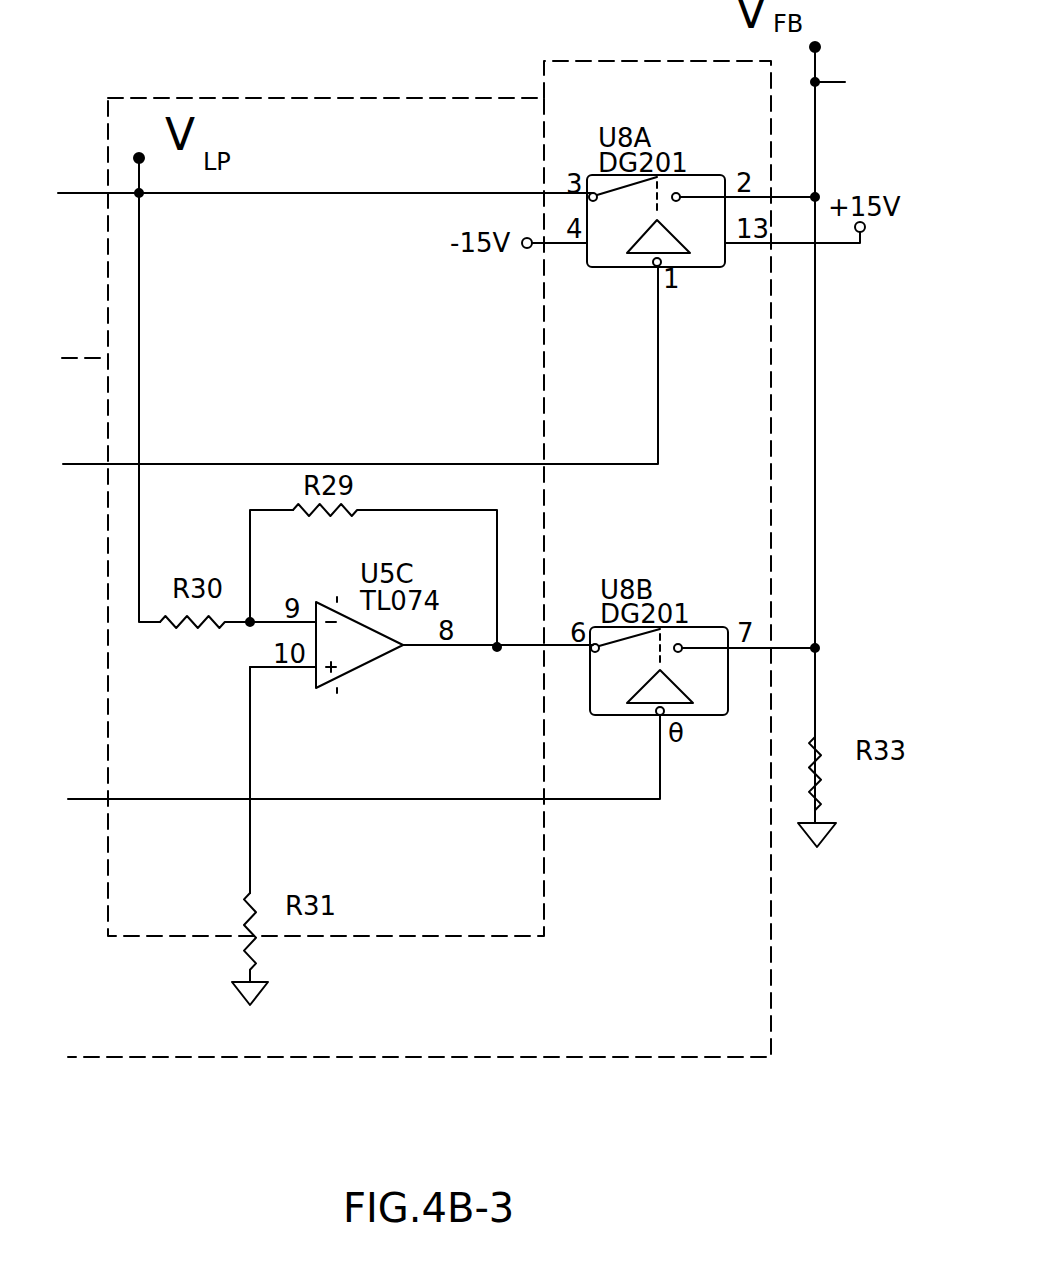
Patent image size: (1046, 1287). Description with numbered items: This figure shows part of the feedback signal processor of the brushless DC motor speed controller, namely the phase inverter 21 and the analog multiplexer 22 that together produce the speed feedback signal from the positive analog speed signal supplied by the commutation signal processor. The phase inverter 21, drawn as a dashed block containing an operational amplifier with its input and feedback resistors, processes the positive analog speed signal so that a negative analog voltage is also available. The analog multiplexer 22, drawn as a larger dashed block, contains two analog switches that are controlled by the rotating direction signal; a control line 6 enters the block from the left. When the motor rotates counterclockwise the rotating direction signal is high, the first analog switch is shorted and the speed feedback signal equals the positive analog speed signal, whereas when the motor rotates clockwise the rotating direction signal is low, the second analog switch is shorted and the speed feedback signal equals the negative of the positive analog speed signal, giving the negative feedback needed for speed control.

The phase inverter 21 is at (273, 97).
The analog multiplexer 22 is at (507, 1057).
The control signal line 6 is at (360, 365).